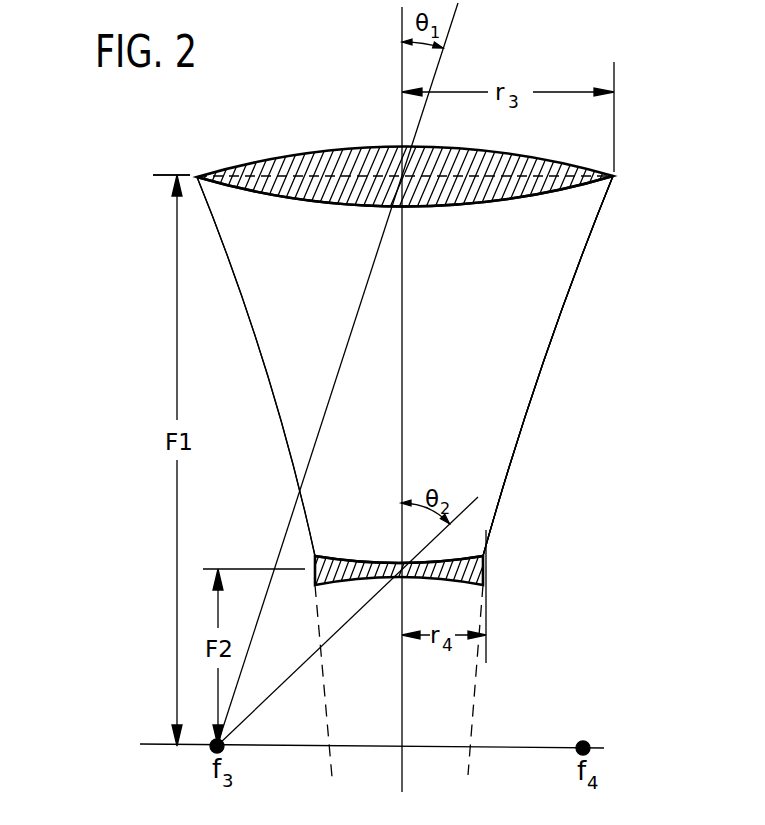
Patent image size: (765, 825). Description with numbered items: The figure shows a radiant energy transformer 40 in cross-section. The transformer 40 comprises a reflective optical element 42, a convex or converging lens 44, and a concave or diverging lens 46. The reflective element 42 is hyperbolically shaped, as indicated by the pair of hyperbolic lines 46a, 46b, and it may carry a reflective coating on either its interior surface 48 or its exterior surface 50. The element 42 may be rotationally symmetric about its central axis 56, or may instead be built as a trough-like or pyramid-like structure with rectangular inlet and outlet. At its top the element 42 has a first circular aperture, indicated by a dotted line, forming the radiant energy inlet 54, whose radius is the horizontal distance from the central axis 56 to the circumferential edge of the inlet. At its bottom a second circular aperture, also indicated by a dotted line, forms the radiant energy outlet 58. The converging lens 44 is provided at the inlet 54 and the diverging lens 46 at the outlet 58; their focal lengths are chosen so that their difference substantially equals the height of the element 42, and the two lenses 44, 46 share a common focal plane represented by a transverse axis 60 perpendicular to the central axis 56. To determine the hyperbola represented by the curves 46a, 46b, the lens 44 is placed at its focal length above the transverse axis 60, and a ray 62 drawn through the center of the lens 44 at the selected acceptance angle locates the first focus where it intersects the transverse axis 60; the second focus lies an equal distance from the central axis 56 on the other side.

The radiant energy transformer 40 is at (140, 180).
The reflective optical element 42 is at (552, 387).
The convex lens 44 is at (578, 190).
The concave lens 46 is at (483, 573).
The hyperbolic line 46a is at (270, 390).
The hyperbolic line 46b is at (517, 433).
The interior surface 48 is at (248, 323).
The exterior surface 50 is at (587, 260).
The radiant energy inlet 54 is at (279, 176).
The central axis 56 is at (402, 350).
The radiant energy outlet 58 is at (337, 557).
The transverse axis 60 is at (523, 746).
The ray 62 is at (282, 542).